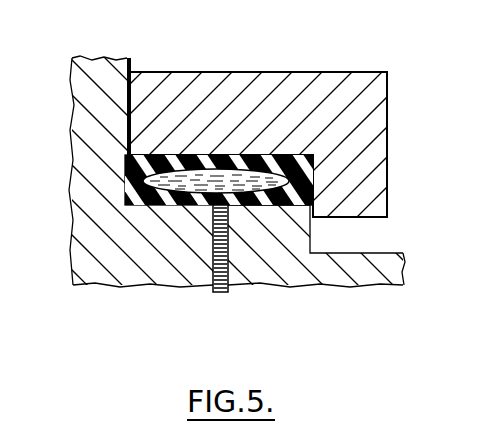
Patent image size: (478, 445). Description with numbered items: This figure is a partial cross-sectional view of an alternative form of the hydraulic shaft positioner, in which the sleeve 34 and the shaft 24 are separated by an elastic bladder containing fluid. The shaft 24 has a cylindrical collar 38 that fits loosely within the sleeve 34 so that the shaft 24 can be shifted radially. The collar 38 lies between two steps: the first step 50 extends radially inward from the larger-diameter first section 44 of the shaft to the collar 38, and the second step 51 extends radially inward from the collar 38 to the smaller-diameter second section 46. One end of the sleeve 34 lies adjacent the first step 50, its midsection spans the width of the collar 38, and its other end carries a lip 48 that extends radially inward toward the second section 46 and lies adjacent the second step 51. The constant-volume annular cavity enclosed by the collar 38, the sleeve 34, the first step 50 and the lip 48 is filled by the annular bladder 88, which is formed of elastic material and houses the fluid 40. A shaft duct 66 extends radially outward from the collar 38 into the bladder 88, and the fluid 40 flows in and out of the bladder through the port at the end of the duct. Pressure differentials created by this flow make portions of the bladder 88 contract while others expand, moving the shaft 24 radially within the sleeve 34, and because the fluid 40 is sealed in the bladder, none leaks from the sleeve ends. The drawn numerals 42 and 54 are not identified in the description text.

The shaft 24 is at (62, 173).
The sleeve 34 is at (303, 86).
The collar 38 is at (290, 240).
The fluid 40 is at (205, 183).
The threaded fastener 42 is at (212, 206).
The first section 44 is at (95, 248).
The second section 46 is at (388, 276).
The lip 48 is at (380, 197).
The first step 50 is at (128, 60).
The second step 51 is at (322, 247).
The stray numeral 54 is at (465, 393).
The shaft duct 66 is at (220, 258).
The annular bladder 88 is at (316, 165).